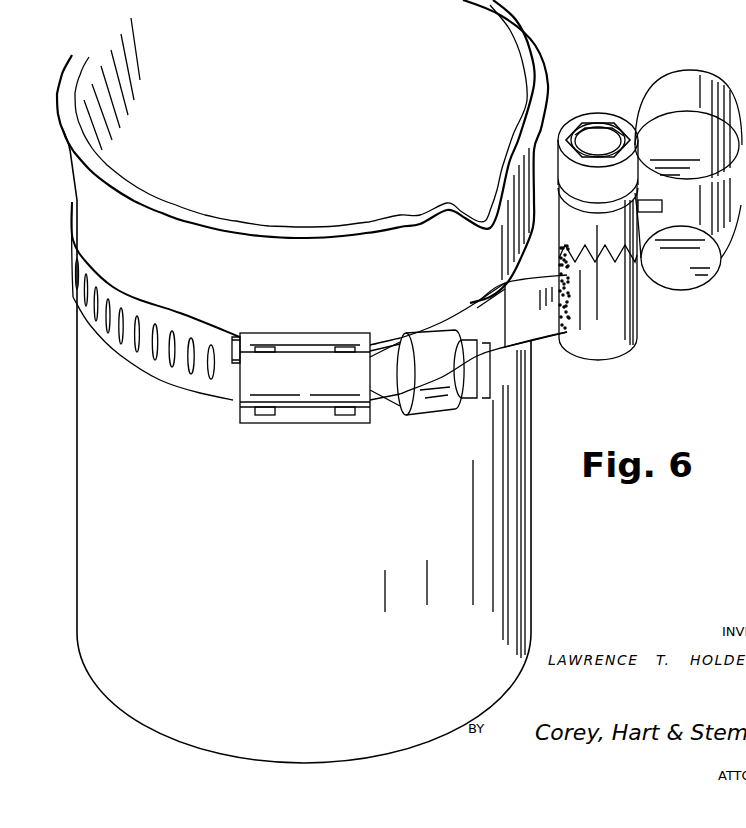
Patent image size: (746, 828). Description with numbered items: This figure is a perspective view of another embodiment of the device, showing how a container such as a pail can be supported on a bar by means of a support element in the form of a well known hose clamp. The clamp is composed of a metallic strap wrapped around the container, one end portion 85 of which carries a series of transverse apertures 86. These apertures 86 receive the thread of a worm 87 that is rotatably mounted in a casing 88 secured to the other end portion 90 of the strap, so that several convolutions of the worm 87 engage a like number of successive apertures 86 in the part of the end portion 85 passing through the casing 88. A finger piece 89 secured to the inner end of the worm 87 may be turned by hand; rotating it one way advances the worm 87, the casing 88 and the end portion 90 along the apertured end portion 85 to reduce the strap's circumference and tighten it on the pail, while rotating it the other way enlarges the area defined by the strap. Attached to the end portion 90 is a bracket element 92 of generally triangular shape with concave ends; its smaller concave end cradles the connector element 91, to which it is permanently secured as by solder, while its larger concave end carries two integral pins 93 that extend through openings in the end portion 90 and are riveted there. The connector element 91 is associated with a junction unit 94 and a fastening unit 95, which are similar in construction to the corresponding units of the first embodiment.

The strap end portion 85 is at (168, 318).
The transverse apertures 86 is at (133, 322).
The worm 87 is at (233, 336).
The casing 88 is at (318, 375).
The finger piece 89 is at (452, 383).
The other end portion of the strap 90 is at (233, 340).
The connector element 91 is at (637, 300).
The bracket element 92 is at (535, 328).
The integral pins 93 is at (688, 180).
The junction unit 94 is at (577, 110).
The fastening unit 95 is at (604, 150).